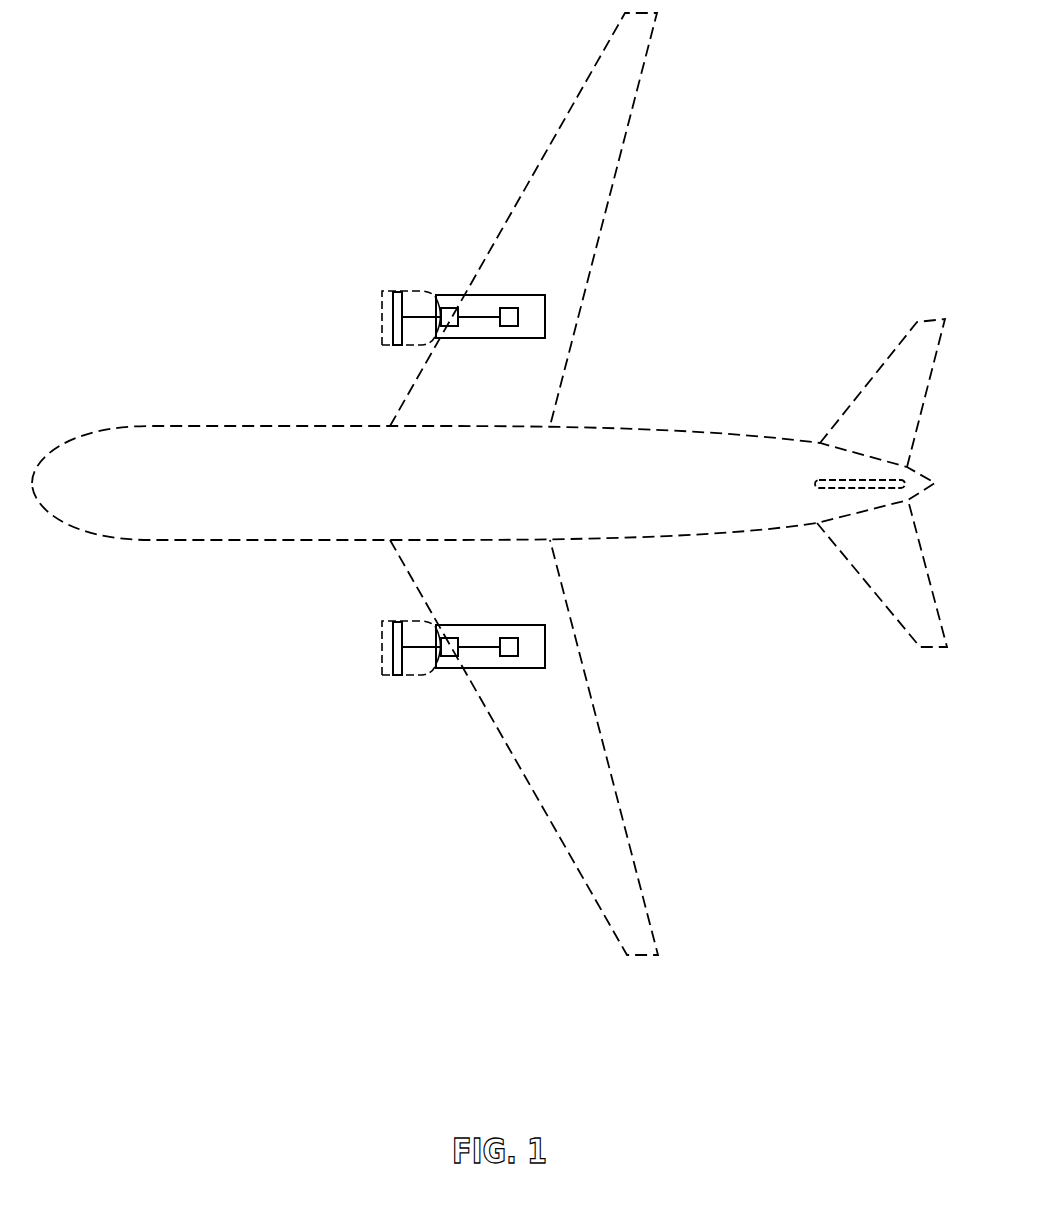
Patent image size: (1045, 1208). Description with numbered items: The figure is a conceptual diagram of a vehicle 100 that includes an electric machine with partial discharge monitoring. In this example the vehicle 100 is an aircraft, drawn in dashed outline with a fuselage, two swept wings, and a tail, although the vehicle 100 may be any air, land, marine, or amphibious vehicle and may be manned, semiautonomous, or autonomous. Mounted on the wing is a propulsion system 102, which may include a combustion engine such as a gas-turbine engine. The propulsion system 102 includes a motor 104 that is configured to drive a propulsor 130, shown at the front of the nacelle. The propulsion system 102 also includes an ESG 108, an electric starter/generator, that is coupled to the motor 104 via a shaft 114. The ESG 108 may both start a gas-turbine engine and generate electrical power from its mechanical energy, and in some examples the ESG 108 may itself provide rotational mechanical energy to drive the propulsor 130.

The vehicle 100 is at (797, 116).
The propulsion system 102 is at (321, 266).
The motor 104 is at (448, 327).
The ESG 108 is at (510, 308).
The shaft 114 is at (491, 319).
The propulsor 130 is at (398, 345).